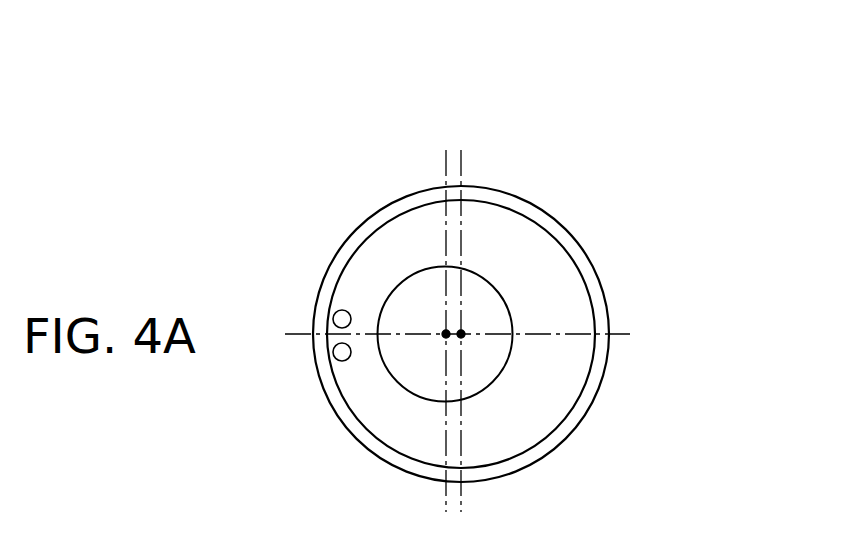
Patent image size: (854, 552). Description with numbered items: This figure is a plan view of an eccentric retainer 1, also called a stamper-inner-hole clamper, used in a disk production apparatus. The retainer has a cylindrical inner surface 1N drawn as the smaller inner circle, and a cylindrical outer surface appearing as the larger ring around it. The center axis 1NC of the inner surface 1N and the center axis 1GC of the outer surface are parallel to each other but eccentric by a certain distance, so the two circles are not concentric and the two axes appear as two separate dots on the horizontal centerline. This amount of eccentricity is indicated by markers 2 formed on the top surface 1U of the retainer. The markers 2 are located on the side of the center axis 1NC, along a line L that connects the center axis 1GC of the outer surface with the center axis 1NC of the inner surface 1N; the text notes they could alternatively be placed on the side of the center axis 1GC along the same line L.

The eccentric retainer 1 is at (502, 305).
The cylindrical inner surface 1N is at (487, 282).
The top surface 1U is at (567, 288).
The line L is at (568, 334).
The markers 2 is at (338, 363).
The center axis of the inner surface 1NC is at (446, 336).
The center axis of the outer surface 1GC is at (461, 336).